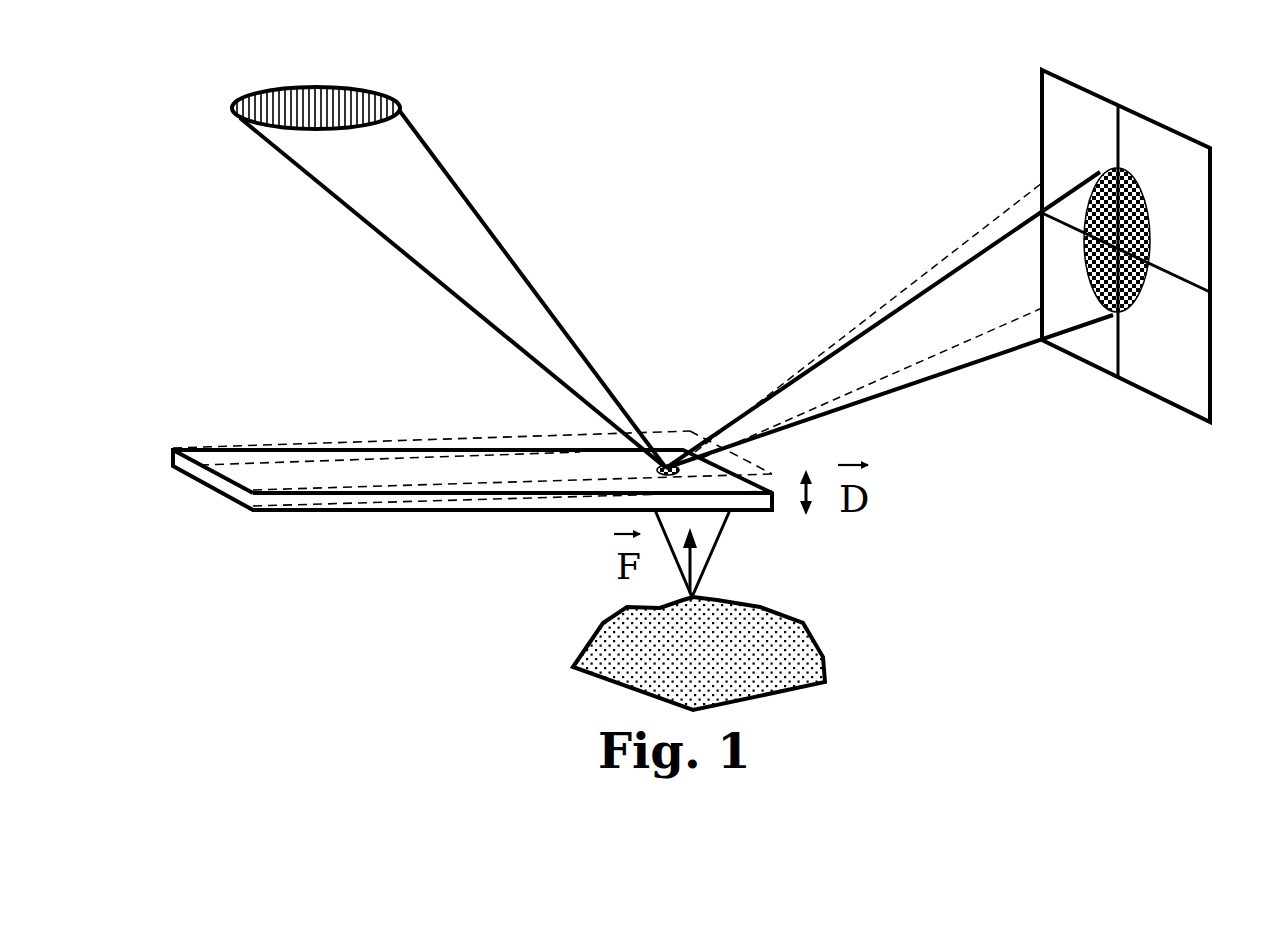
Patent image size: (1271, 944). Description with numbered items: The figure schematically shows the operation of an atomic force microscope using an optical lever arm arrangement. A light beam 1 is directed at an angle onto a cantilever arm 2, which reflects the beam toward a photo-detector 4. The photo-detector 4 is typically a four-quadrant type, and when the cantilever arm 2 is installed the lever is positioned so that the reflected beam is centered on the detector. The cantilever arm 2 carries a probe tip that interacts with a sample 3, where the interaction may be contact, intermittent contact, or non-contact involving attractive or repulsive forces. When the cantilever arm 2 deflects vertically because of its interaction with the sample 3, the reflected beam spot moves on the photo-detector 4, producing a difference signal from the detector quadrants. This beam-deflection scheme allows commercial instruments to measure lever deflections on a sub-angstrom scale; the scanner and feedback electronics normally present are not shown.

The light beam 1 is at (217, 138).
The cantilever arm 2 is at (198, 488).
The sample 3 is at (855, 652).
The photo-detector 4 is at (1020, 147).